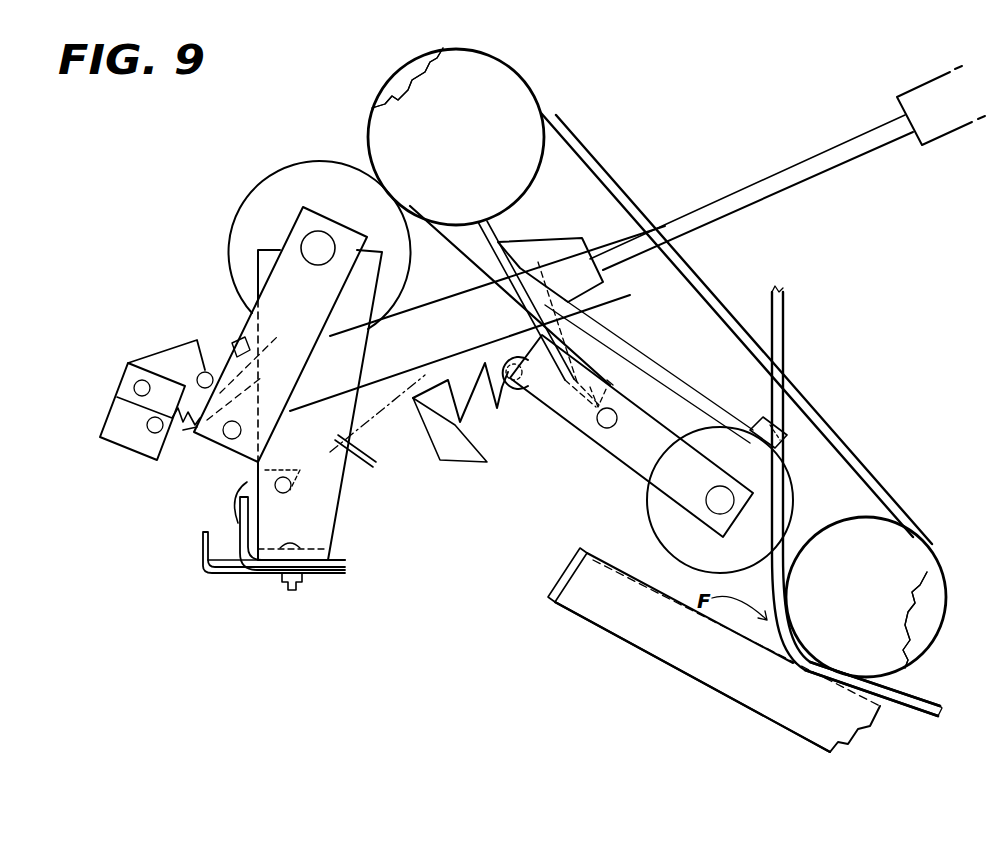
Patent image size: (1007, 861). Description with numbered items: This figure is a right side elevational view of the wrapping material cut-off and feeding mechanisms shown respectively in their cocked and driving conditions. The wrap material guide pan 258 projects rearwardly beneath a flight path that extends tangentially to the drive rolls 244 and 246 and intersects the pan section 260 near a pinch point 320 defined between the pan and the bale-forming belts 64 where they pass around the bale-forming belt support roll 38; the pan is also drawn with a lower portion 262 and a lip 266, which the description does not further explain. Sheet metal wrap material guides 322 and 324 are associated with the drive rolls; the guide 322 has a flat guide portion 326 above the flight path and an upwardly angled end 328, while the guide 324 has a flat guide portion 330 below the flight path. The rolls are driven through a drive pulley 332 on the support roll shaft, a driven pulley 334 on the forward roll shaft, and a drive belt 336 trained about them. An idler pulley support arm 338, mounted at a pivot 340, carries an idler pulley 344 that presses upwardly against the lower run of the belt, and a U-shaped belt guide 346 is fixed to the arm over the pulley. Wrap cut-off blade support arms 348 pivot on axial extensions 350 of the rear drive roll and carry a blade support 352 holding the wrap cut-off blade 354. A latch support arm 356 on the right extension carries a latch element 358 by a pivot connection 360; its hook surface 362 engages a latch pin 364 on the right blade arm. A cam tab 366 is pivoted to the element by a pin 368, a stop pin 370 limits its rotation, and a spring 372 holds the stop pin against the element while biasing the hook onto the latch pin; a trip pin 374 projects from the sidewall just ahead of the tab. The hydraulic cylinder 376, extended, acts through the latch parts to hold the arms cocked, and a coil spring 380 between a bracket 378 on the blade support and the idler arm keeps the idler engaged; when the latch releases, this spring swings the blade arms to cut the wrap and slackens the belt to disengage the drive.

The bale-forming belt support roll 38 is at (940, 606).
The bale-forming belts 64 is at (934, 702).
The forward drive roll 244 is at (395, 82).
The rear drive roll 246 is at (303, 163).
The wrap material guide pan 258 is at (609, 653).
The pan section 260 is at (593, 547).
The tray bottom 262 is at (713, 692).
The lip 266 is at (562, 567).
The pinch point 320 is at (772, 652).
The wrap material guide 322 is at (528, 215).
The wrap material guide 324 is at (477, 474).
The flat guide portion 326 is at (537, 322).
The upwardly angled end 328 is at (609, 378).
The flat guide portion 330 is at (447, 352).
The drive pulley 332 is at (883, 569).
The driven pulley 334 is at (501, 109).
The drive belt 336 is at (610, 177).
The idler pulley support arm 338 is at (628, 472).
The pivot 340 is at (598, 423).
The idler pulley 344 is at (668, 523).
The U-shaped belt guide 346 is at (775, 465).
The wrap cut-off blade support arms 348 is at (340, 492).
The axial extensions 350 is at (303, 242).
The blade support 352 is at (250, 570).
The wrap cut-off blade 354 is at (333, 570).
The latch support arm 356 is at (240, 312).
The latch element 358 is at (187, 425).
The pivot connection 360 is at (233, 440).
The hook surface 362 is at (290, 472).
The latch pin 364 is at (331, 533).
The cam tab 366 is at (118, 448).
The pin 368 is at (133, 388).
The stop pin 370 is at (147, 423).
The spring 372 is at (213, 357).
The trip pin 374 is at (258, 363).
The hydraulic cylinder 376 is at (937, 140).
The bracket 378 is at (240, 542).
The coil spring 380 is at (497, 408).